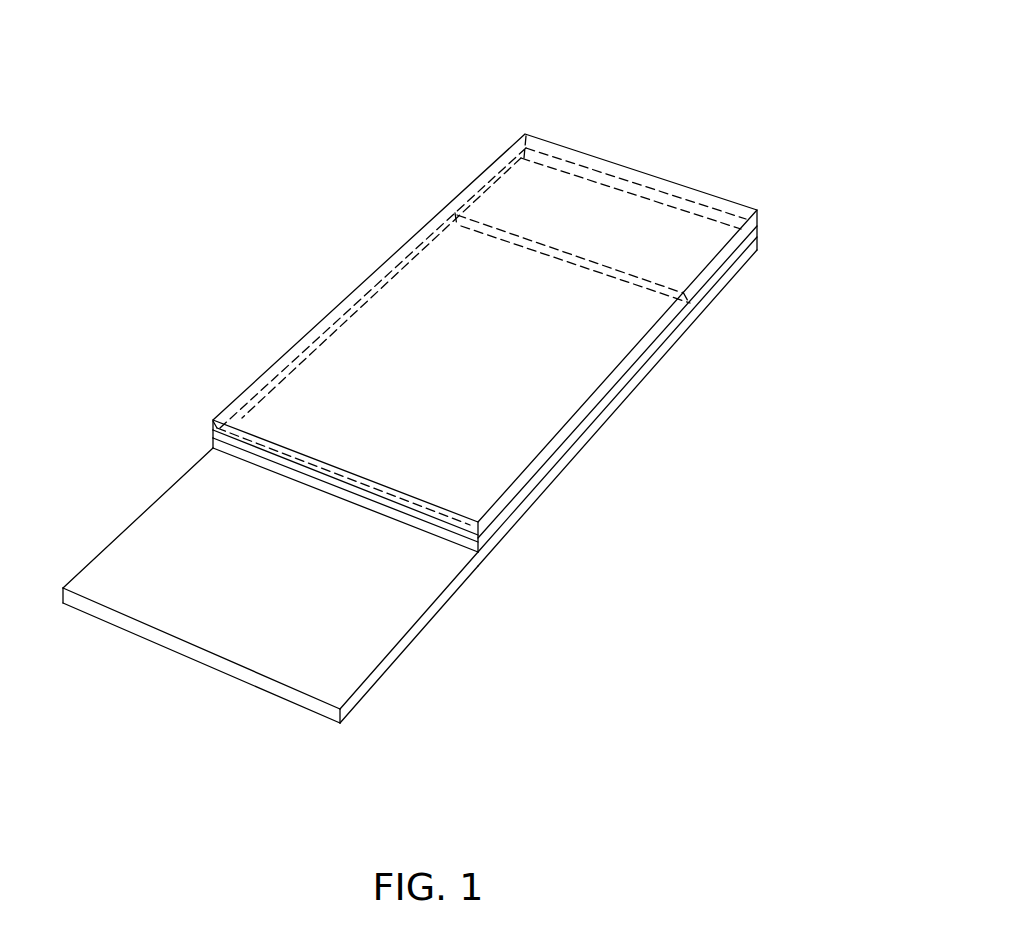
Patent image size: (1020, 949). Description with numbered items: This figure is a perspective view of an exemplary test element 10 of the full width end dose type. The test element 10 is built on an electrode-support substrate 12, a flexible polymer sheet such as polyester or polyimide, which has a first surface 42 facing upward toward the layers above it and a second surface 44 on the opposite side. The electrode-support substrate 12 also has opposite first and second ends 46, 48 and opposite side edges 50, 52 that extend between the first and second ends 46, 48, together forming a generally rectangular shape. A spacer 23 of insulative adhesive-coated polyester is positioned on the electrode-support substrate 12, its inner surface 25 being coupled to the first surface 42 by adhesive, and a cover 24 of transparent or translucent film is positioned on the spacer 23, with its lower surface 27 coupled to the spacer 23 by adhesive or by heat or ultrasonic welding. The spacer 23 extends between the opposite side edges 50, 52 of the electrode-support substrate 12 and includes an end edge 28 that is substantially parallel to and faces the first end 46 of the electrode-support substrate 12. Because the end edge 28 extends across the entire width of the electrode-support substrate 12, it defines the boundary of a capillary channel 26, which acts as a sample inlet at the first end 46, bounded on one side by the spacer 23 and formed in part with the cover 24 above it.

The test element 10 is at (638, 80).
The electrode-support substrate 12 is at (431, 636).
The spacer 23 is at (593, 413).
The cover 24 is at (628, 163).
The inner surface 25 is at (646, 370).
The capillary channel 26 is at (700, 204).
The lower surface 27 is at (758, 227).
The end edge 28 is at (491, 221).
The first surface 42 is at (432, 582).
The second surface 44 is at (346, 681).
The first end 46 is at (561, 162).
The second end 48 is at (281, 692).
The side edge 50 is at (167, 490).
The side edge 52 is at (503, 546).